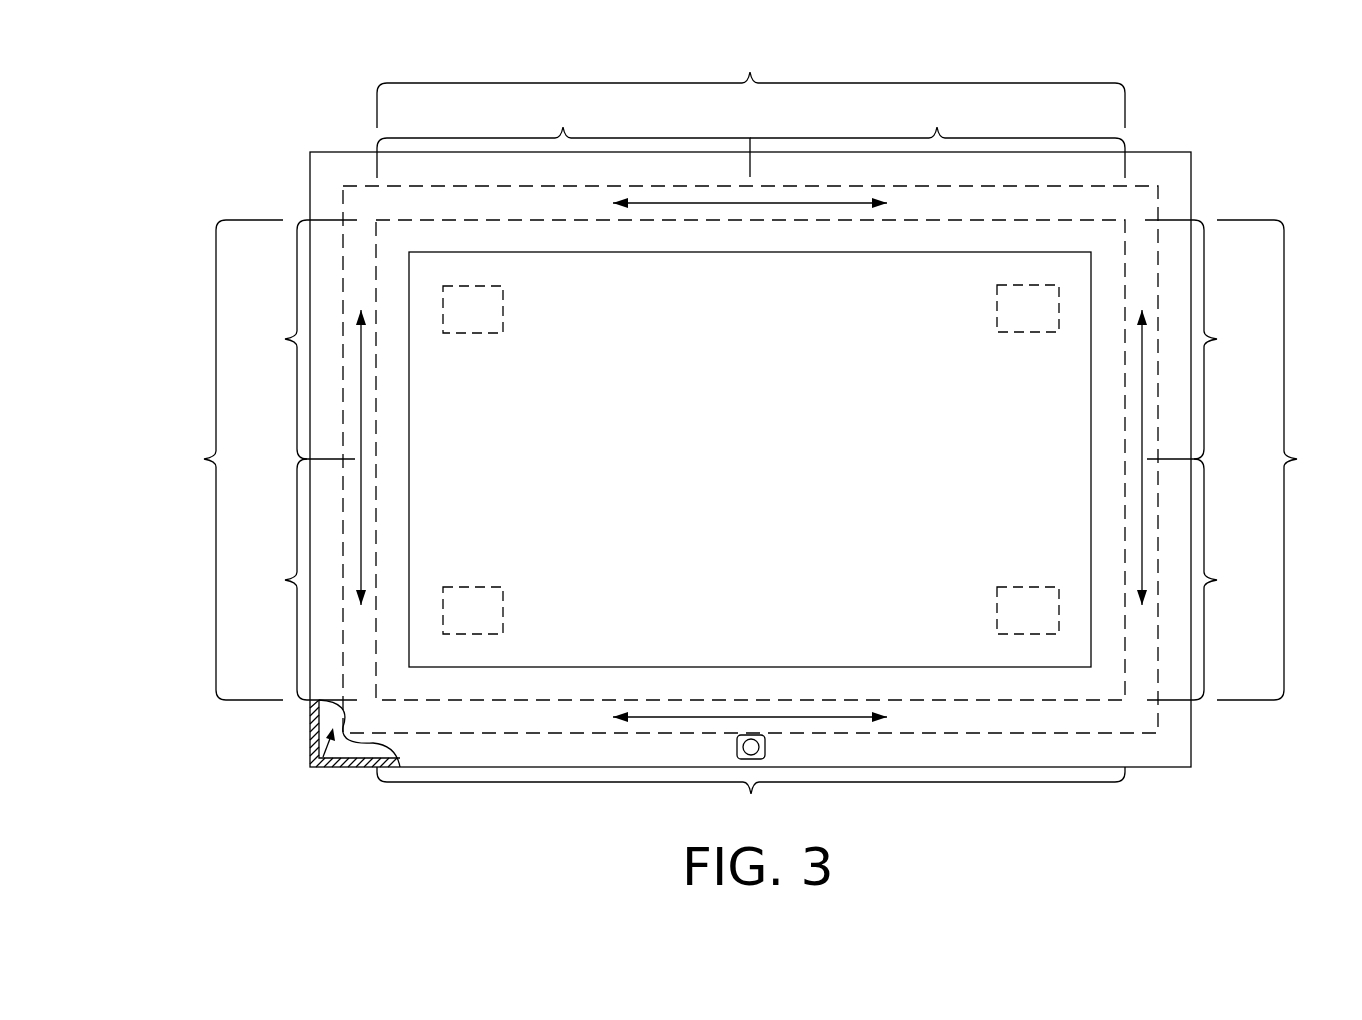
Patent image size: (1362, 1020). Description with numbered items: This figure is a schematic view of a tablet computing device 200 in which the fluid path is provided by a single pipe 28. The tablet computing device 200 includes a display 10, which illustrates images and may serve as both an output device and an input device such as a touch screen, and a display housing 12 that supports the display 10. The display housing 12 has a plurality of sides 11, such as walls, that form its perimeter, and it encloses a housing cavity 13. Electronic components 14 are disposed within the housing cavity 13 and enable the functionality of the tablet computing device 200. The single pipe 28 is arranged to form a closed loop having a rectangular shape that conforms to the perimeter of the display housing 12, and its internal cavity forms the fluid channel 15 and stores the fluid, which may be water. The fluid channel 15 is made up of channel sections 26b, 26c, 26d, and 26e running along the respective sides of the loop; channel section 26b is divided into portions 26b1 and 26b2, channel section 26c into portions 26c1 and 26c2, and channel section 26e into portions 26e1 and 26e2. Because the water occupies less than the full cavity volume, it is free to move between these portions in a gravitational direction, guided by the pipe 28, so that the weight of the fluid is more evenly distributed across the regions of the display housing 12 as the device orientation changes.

The tablet computing device 200 is at (314, 112).
The display housing 12 is at (306, 149).
The sides 11 is at (1148, 138).
The single pipe 28 is at (1158, 175).
The display 10 is at (588, 248).
The electronic components 14 is at (505, 318).
The fluid channel 15 is at (729, 206).
The housing cavity 13 is at (312, 768).
The channel section 26b is at (751, 87).
The portion of channel section 26b1 is at (563, 140).
The portion of channel section 26b2 is at (937, 140).
The channel section 26d is at (751, 796).
The channel section 26e is at (221, 460).
The portion of channel section 26e1 is at (293, 339).
The portion of channel section 26e2 is at (293, 579).
The channel section 26c is at (1277, 460).
The portion of channel section 26c1 is at (1209, 339).
The portion of channel section 26c2 is at (1210, 579).